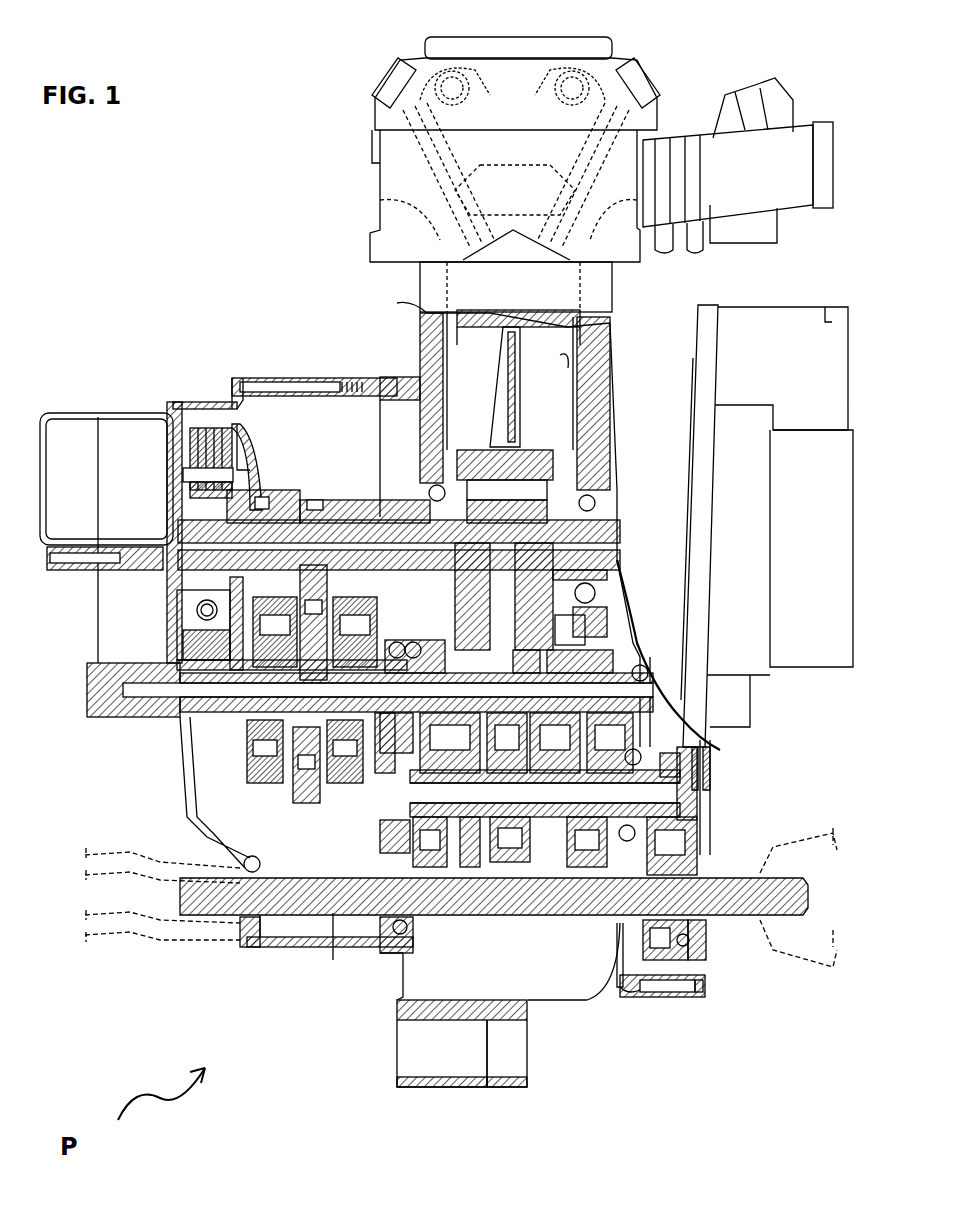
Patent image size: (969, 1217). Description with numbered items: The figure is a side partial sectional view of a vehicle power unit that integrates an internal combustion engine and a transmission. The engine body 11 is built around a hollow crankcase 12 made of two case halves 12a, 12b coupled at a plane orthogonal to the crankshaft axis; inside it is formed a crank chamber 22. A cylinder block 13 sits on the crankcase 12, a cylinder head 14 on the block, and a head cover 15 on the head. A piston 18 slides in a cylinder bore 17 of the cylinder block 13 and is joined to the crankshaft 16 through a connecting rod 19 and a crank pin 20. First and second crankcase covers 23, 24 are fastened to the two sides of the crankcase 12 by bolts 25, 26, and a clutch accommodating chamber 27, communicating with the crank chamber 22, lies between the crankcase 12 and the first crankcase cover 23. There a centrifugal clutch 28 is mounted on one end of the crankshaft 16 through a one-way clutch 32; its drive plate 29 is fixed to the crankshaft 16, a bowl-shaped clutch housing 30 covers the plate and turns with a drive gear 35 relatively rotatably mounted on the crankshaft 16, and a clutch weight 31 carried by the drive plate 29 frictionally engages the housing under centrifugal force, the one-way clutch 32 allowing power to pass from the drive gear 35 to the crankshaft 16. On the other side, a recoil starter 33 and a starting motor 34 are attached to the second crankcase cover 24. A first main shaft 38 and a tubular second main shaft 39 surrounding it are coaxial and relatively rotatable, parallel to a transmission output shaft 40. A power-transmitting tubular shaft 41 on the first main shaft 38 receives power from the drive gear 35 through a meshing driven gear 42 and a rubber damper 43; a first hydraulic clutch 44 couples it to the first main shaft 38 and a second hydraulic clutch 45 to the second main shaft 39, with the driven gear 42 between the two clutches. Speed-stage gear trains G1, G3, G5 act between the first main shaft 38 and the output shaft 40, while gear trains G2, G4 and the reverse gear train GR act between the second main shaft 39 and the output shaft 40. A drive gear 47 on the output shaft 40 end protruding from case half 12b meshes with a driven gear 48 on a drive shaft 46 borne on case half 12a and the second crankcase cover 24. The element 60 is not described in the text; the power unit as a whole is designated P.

The engine body 11 is at (407, 359).
The crankcase 12 is at (493, 1078).
The case half 12a is at (453, 1020).
The case half 12b is at (553, 1003).
The cylinder block 13 is at (430, 294).
The cylinder head 14 is at (420, 200).
The head cover 15 is at (512, 62).
The crankshaft 16 is at (373, 525).
The cylinder bore 17 is at (568, 362).
The piston 18 is at (473, 327).
The connecting rod 19 is at (520, 397).
The crank pin 20 is at (560, 467).
The crank chamber 22 is at (494, 939).
The first crankcase cover 23 is at (180, 737).
The second crankcase cover 24 is at (667, 975).
The bolt 25 is at (300, 380).
The bolt 26 is at (703, 987).
The clutch accommodating chamber 27 is at (308, 833).
The centrifugal clutch 28 is at (252, 432).
The drive plate 29 is at (243, 447).
The clutch housing 30 is at (213, 418).
The clutch weight 31 is at (193, 442).
The one-way clutch 32 is at (260, 507).
The recoil starter 33 is at (780, 578).
The starting motor 34 is at (764, 526).
The drive gear 35 is at (315, 500).
The first main shaft 38 is at (377, 790).
The second main shaft 39 is at (412, 640).
The transmission output shaft 40 is at (697, 779).
The power-transmitting tubular shaft 41 is at (245, 727).
The driven gear 42 is at (293, 792).
The rubber damper 43 is at (350, 527).
The first hydraulic clutch 44 is at (262, 789).
The second hydraulic clutch 45 is at (354, 798).
The drive shaft 46 is at (335, 942).
The drive gear 47 is at (683, 727).
The driven gear 48 is at (690, 960).
The cable 60 is at (607, 623).
The first speed gear train G1 is at (593, 870).
The second speed gear train G2 is at (472, 870).
The third speed gear train G3 is at (515, 641).
The fourth speed gear train G4 is at (430, 857).
The fifth speed gear train G5 is at (577, 847).
The reverse gear train GR is at (510, 873).